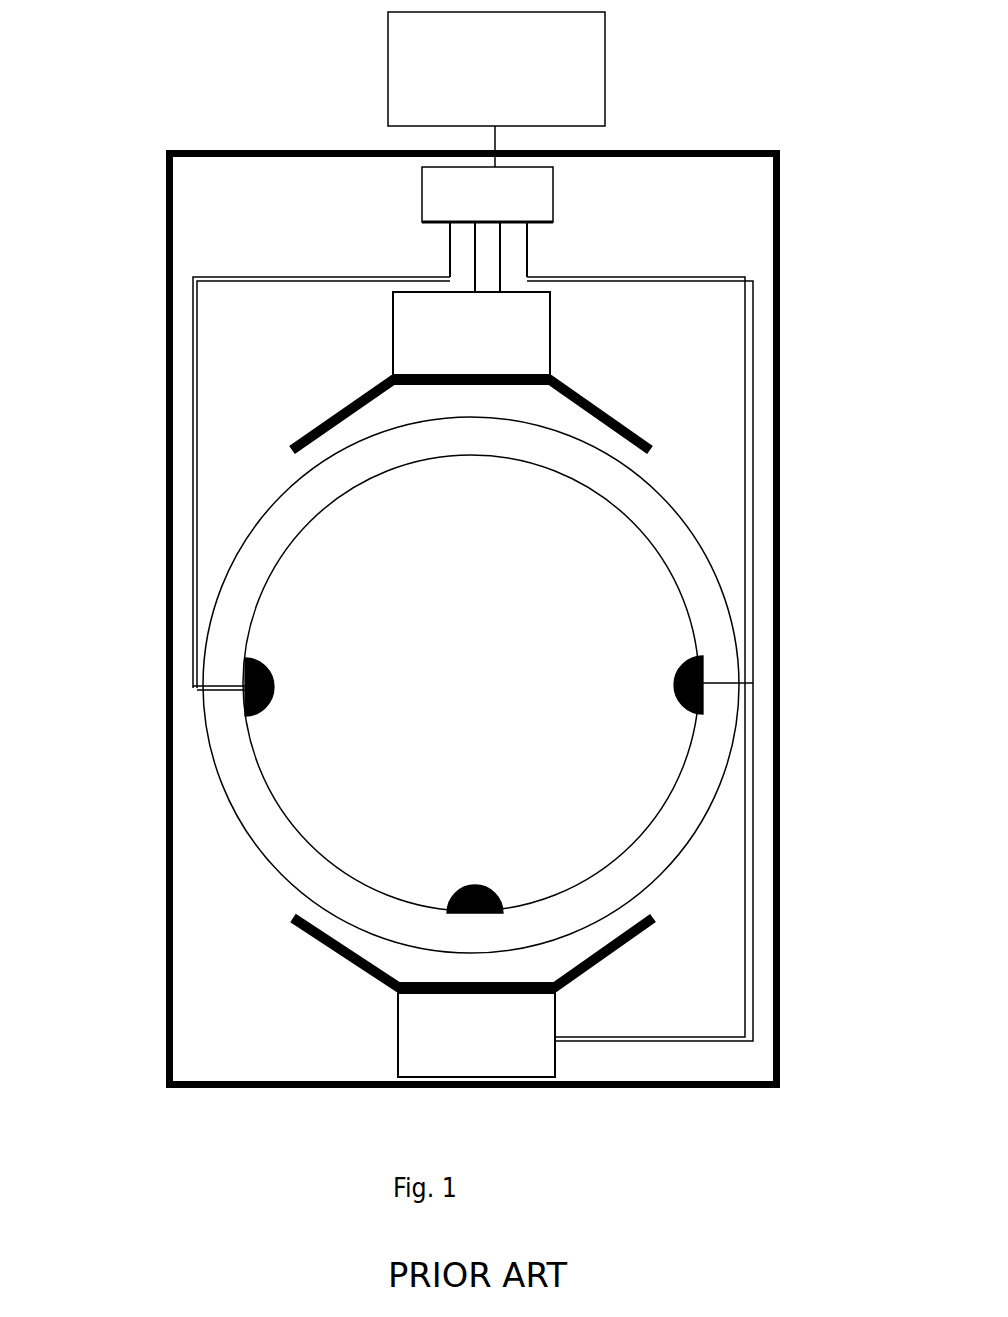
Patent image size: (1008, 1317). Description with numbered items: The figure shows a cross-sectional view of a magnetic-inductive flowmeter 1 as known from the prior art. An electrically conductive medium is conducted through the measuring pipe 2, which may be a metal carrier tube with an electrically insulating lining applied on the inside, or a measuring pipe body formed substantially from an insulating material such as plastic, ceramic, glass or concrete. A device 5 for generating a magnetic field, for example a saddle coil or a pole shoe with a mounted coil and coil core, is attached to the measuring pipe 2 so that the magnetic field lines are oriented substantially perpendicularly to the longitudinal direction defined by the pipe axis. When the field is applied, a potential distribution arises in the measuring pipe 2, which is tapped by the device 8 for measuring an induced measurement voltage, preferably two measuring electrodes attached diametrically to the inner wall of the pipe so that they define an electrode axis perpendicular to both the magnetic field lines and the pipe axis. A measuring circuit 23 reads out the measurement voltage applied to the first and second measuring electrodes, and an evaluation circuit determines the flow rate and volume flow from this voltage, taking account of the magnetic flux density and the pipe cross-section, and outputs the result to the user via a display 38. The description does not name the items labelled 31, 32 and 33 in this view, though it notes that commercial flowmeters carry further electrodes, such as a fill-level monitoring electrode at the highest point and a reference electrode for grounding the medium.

The magnetic-inductive flowmeter 1 is at (132, 320).
The measuring pipe 2 is at (702, 473).
The device for generating a magnetic field 5 is at (395, 357).
The device for measuring an induced measurement voltage 8 is at (247, 677).
The measuring circuit 23 is at (487, 229).
The inner housing wall 31 is at (230, 989).
The right sensor 32 is at (722, 633).
The bottom sensor 33 is at (480, 915).
The display 38 is at (496, 89).